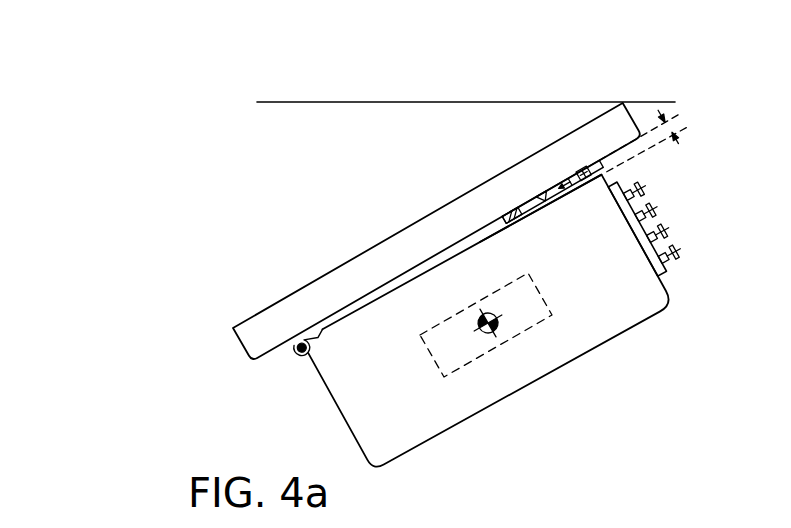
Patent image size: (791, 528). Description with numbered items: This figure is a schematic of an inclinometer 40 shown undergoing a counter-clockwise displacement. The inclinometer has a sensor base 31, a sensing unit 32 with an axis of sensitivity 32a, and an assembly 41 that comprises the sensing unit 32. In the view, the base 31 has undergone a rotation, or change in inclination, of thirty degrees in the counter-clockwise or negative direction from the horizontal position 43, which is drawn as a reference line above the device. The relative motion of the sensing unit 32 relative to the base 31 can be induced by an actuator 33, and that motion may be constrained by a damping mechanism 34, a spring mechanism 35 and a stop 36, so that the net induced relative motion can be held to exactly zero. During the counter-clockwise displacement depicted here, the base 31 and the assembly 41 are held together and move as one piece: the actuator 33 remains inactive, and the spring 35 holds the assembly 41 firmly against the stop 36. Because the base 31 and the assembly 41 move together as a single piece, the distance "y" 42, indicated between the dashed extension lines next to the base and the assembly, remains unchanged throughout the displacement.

The electronic device / notebook computer 40 is at (133, 77).
The sensor base 31 is at (280, 319).
The sensing unit 32 is at (537, 315).
The axis of sensitivity 32a is at (483, 338).
The actuator 33 is at (512, 213).
The damping mechanism 34 is at (597, 172).
The spring mechanism 35 is at (569, 203).
The stop 36 is at (545, 197).
The assembly 41 is at (644, 287).
The distance "y" 42 is at (683, 122).
The horizontal position 43 is at (337, 108).